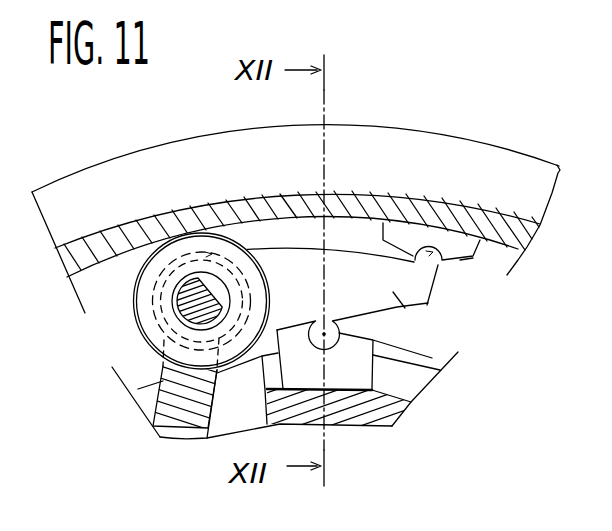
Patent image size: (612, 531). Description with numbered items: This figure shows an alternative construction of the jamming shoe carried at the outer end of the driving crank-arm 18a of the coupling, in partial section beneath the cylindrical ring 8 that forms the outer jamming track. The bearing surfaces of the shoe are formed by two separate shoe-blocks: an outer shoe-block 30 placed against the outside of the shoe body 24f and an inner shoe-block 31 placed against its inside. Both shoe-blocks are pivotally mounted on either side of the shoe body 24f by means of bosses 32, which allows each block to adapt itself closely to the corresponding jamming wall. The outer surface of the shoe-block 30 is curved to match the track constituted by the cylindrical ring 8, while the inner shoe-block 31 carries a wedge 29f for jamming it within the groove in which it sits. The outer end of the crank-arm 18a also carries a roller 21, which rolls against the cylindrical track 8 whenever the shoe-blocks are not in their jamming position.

The cylindrical ring 8 is at (93, 270).
The roller 21 is at (140, 331).
The driving crank-arm 18a is at (155, 405).
The shoe-block 30 is at (409, 234).
The shoe-block 31 is at (349, 371).
The bosses 32 is at (438, 265).
The shoe body 24f is at (428, 303).
The wedge 29f is at (344, 411).